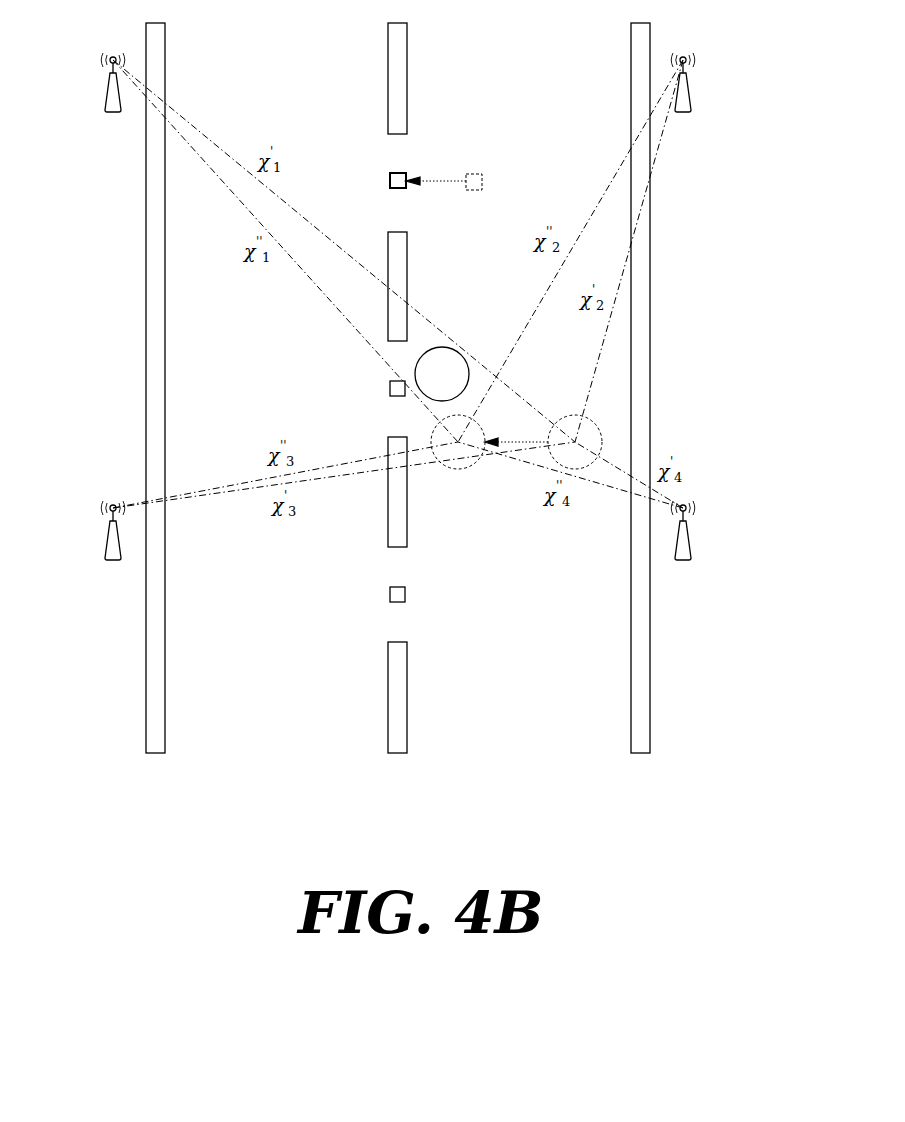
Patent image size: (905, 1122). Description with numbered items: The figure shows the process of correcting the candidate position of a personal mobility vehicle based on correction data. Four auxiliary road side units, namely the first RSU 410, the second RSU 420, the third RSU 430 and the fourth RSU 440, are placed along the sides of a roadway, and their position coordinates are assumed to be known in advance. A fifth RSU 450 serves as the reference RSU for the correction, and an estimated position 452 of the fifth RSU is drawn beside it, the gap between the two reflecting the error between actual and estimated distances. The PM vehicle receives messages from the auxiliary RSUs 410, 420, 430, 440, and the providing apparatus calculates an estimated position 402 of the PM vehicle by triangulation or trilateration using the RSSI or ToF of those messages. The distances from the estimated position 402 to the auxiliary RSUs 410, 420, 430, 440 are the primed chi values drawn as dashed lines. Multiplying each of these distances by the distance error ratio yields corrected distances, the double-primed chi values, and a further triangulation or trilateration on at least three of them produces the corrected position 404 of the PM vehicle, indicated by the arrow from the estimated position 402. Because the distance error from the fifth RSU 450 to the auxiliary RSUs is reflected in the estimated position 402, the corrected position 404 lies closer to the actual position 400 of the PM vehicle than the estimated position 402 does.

The actual position of PM vehicle 400 is at (437, 348).
The estimated position of PM vehicle 402 is at (565, 418).
The corrected position of PM vehicle 404 is at (463, 470).
The first RSU 410 is at (105, 98).
The second RSU 420 is at (691, 98).
The third RSU 430 is at (105, 546).
The fourth RSU 440 is at (691, 546).
The fifth RSU 450 is at (390, 180).
The estimated position of fifth RSU 452 is at (482, 180).